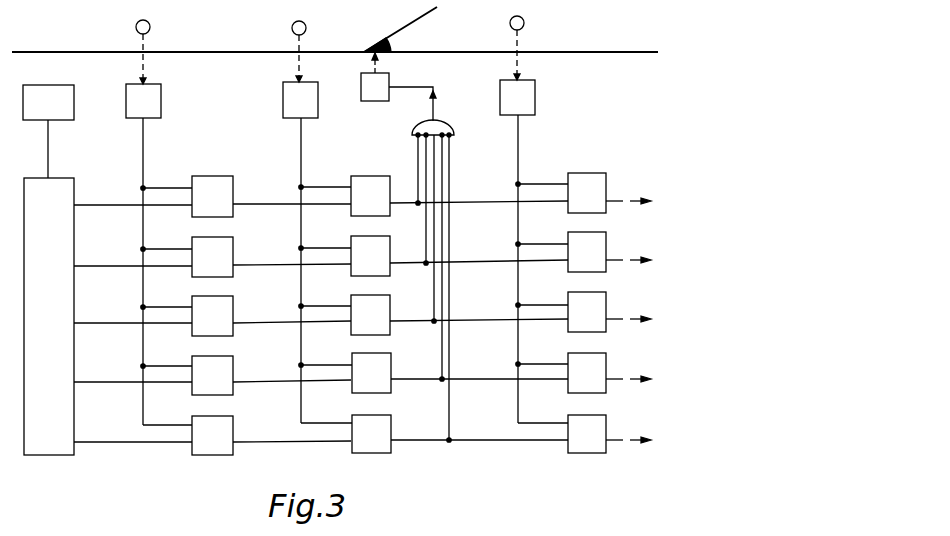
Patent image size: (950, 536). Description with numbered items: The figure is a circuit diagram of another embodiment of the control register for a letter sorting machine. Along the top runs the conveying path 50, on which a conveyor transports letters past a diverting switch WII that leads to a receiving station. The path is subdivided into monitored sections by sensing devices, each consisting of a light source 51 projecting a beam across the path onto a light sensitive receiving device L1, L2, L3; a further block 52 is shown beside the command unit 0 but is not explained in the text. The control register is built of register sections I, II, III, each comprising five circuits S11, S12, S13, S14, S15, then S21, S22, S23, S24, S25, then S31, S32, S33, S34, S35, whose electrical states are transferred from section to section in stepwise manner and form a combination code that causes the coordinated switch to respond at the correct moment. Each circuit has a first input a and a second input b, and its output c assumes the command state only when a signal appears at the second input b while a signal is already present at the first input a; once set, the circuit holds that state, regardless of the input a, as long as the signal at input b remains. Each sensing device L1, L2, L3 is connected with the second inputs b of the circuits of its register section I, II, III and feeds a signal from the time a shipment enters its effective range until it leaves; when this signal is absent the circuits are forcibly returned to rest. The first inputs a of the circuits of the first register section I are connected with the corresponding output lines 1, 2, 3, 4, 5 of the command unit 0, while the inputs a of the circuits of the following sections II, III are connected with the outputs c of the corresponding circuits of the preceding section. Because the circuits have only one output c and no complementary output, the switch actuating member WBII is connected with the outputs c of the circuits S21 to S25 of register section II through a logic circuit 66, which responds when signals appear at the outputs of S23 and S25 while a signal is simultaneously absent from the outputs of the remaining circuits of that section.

The conveying path 50 is at (214, 52).
The light source 51 is at (306, 26).
The start signal device 52 is at (65, 112).
The light sensitive receiving device L1 is at (126, 108).
The light sensitive receiving device L2 is at (283, 106).
The light sensitive receiving device L3 is at (500, 103).
The diverting switch WII is at (406, 29).
The switch actuating member WBII is at (391, 78).
The logic circuit 66 is at (420, 129).
The command unit 0 is at (49, 332).
The output line 1 is at (113, 204).
The output line 2 is at (111, 265).
The output line 3 is at (111, 323).
The output line 4 is at (113, 382).
The output line 5 is at (123, 442).
The circuit S11 is at (246, 196).
The circuit S12 is at (246, 257).
The circuit S13 is at (246, 316).
The circuit S14 is at (246, 375).
The circuit S15 is at (247, 435).
The circuit S21 is at (433, 196).
The circuit S22 is at (433, 256).
The circuit S23 is at (433, 315).
The circuit S24 is at (433, 373).
The circuit S25 is at (434, 434).
The circuit S31 is at (583, 193).
The circuit S32 is at (583, 252).
The circuit S33 is at (583, 312).
The circuit S34 is at (583, 373).
The circuit S35 is at (584, 434).
The register section I is at (209, 476).
The register section II is at (365, 472).
The register section III is at (585, 470).
The first input a is at (360, 213).
The second input b is at (361, 180).
The output c is at (433, 214).